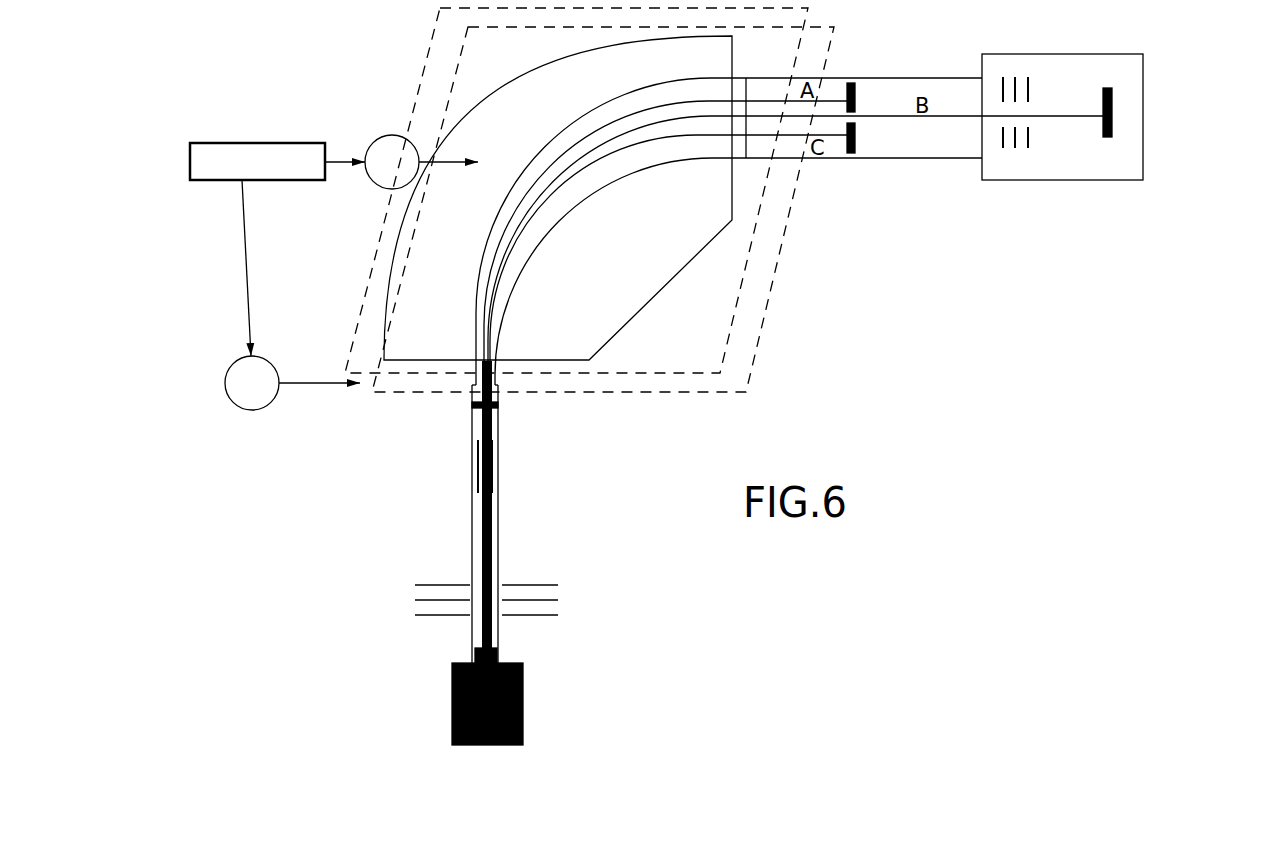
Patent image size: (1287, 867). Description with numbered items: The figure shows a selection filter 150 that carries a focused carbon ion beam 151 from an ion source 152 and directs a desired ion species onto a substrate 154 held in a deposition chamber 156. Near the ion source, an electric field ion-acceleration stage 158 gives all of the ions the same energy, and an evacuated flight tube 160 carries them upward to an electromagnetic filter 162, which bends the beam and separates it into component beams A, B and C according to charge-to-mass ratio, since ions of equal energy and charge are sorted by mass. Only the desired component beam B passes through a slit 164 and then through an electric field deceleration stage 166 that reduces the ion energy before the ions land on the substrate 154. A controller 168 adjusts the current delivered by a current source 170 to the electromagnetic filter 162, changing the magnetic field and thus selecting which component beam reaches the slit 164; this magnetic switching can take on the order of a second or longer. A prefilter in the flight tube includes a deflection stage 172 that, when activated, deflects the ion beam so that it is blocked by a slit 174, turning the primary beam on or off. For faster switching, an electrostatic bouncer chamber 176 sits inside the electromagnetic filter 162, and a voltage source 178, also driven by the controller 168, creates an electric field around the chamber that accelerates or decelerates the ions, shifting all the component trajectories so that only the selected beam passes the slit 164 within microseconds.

The selection filter 150 is at (817, 362).
The focused carbon ion beam 151 is at (492, 380).
The ion source 152 is at (452, 710).
The substrate 154 is at (1128, 90).
The deposition chamber 156 is at (1112, 182).
The electric field ion-acceleration stage 158 is at (558, 600).
The evacuated flight tube 160 is at (470, 527).
The electromagnetic filter 162 is at (513, 77).
The slit 164 is at (865, 147).
The electric field deceleration stage 166 is at (1017, 165).
The controller 168 is at (250, 143).
The current source 170 is at (385, 136).
The deflection stage 172 is at (478, 472).
The slit 174 is at (470, 412).
The electrostatic bouncer chamber 176 is at (597, 200).
The voltage source 178 is at (262, 410).